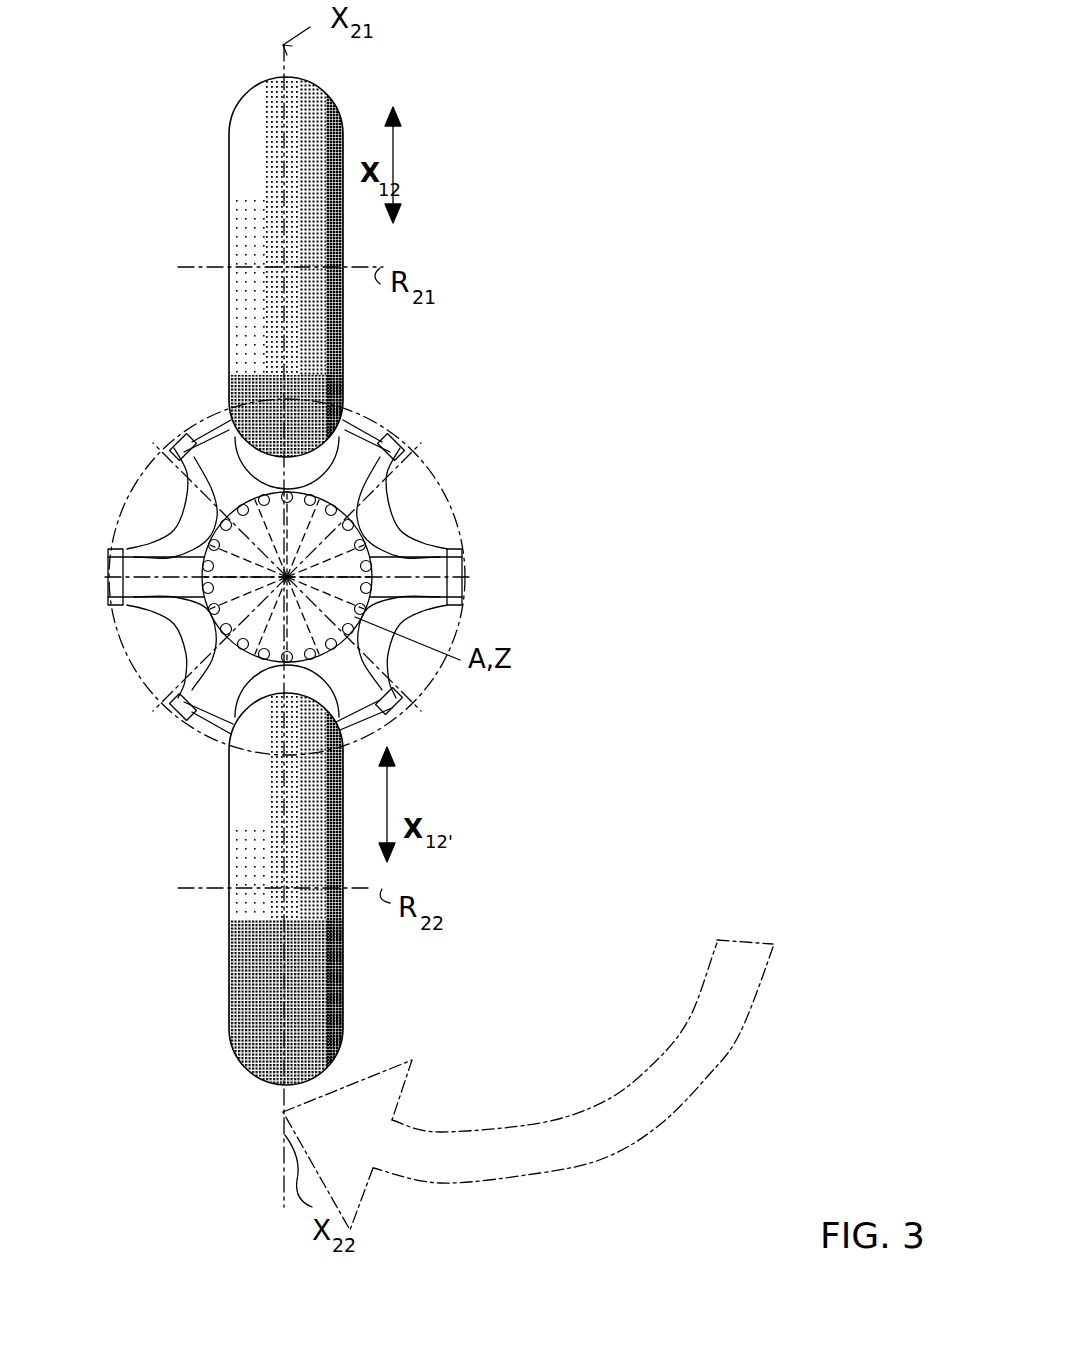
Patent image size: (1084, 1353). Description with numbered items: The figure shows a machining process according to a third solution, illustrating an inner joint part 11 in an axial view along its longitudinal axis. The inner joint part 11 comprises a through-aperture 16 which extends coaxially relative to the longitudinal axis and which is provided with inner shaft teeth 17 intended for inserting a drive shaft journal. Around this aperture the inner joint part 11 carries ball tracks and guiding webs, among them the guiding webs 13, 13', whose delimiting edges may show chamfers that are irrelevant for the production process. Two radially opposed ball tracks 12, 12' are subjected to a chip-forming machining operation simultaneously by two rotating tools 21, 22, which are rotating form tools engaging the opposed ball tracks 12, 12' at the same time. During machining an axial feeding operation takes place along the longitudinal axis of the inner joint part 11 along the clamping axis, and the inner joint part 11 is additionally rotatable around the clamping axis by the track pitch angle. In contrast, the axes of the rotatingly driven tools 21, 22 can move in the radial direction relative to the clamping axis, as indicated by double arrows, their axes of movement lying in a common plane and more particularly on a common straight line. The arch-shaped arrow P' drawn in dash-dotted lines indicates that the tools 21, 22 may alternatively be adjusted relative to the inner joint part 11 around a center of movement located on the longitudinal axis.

The inner joint part 11 is at (176, 446).
The ball track 12 is at (317, 423).
The ball track 12' is at (314, 741).
The guiding web 13 is at (449, 552).
The guiding web 13' is at (135, 560).
The through-aperture 16 is at (390, 636).
The inner shaft teeth 17 is at (388, 697).
The rotating tool 21 is at (336, 107).
The rotating tool 22 is at (343, 1016).
The arrow P' is at (535, 1085).